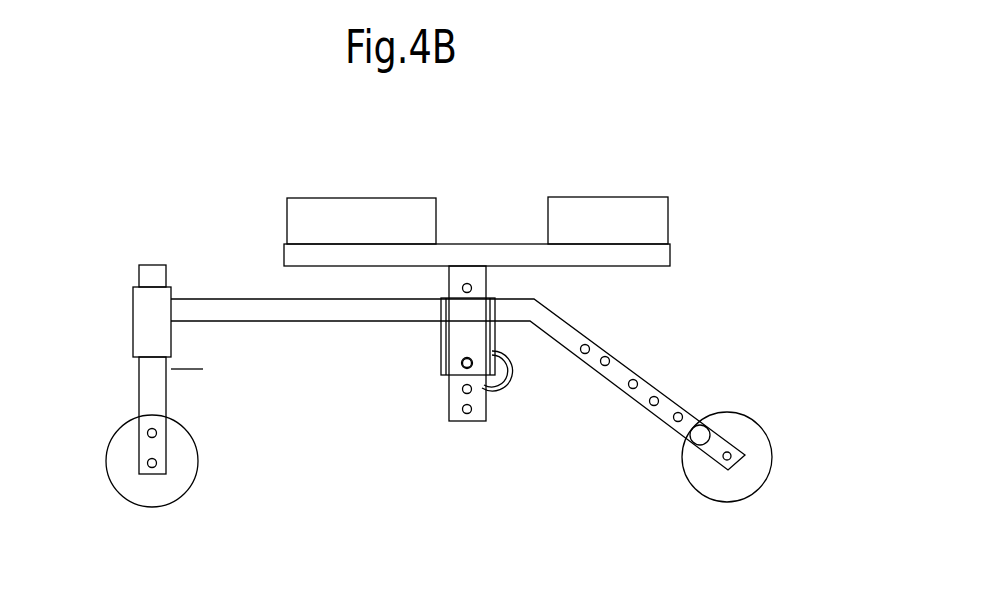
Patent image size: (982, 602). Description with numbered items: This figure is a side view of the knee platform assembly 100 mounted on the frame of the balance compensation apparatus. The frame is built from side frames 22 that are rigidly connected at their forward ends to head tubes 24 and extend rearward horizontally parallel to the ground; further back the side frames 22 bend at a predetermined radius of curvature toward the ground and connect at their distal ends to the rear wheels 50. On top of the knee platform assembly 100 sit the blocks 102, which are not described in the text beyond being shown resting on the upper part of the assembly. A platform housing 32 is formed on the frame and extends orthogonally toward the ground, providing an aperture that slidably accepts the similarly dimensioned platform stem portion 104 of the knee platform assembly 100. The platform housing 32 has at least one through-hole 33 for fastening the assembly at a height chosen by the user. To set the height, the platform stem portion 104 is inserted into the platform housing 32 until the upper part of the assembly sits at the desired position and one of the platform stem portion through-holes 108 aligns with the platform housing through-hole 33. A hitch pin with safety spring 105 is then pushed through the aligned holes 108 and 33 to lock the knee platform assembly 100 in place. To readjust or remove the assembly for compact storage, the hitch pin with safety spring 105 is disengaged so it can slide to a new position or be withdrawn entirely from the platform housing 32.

The side frame 22 is at (263, 313).
The head tube 24 is at (152, 319).
The platform housing 32 is at (445, 360).
The through-hole 33 is at (413, 457).
The rear wheel 50 is at (768, 438).
The knee platform assembly 100 is at (693, 211).
The block 102 is at (357, 225).
The platform stem portion 104 is at (487, 407).
The hitch pin with safety spring 105 is at (512, 372).
The platform stem portion through-hole 108 is at (466, 365).